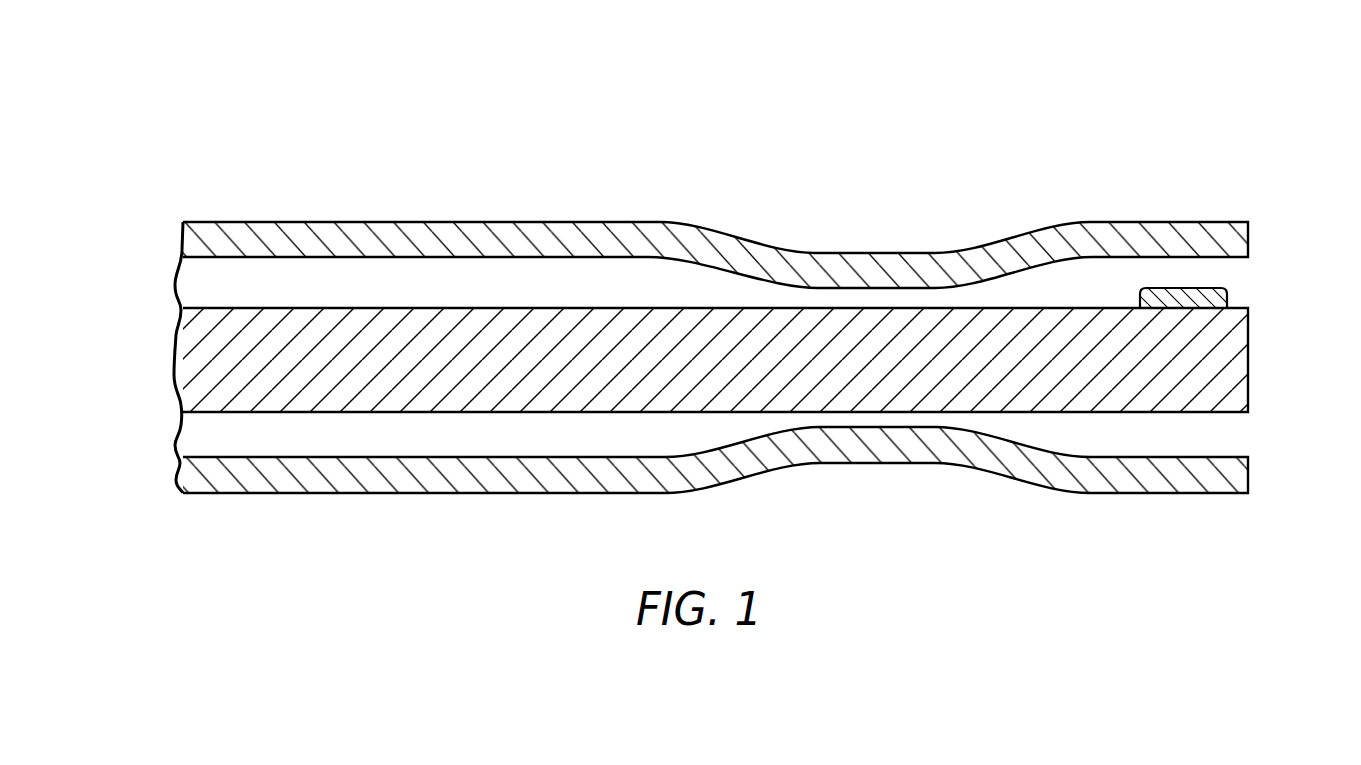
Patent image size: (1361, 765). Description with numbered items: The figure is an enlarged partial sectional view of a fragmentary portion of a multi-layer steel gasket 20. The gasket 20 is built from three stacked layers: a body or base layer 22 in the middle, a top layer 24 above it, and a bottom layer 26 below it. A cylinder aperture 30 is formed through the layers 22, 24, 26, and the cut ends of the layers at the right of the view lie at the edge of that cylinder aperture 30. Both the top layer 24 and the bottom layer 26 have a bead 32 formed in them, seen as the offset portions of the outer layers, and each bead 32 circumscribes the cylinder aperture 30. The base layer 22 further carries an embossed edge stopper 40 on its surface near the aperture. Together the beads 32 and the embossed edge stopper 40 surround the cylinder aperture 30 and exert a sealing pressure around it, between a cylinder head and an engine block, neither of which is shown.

The MLS gasket 20 is at (1232, 116).
The base layer 22 is at (200, 358).
The top layer 24 is at (245, 237).
The bottom layer 26 is at (300, 482).
The cylinder aperture 30 is at (1250, 235).
The bead 32 is at (870, 267).
The embossed edge stopper 40 is at (1228, 298).